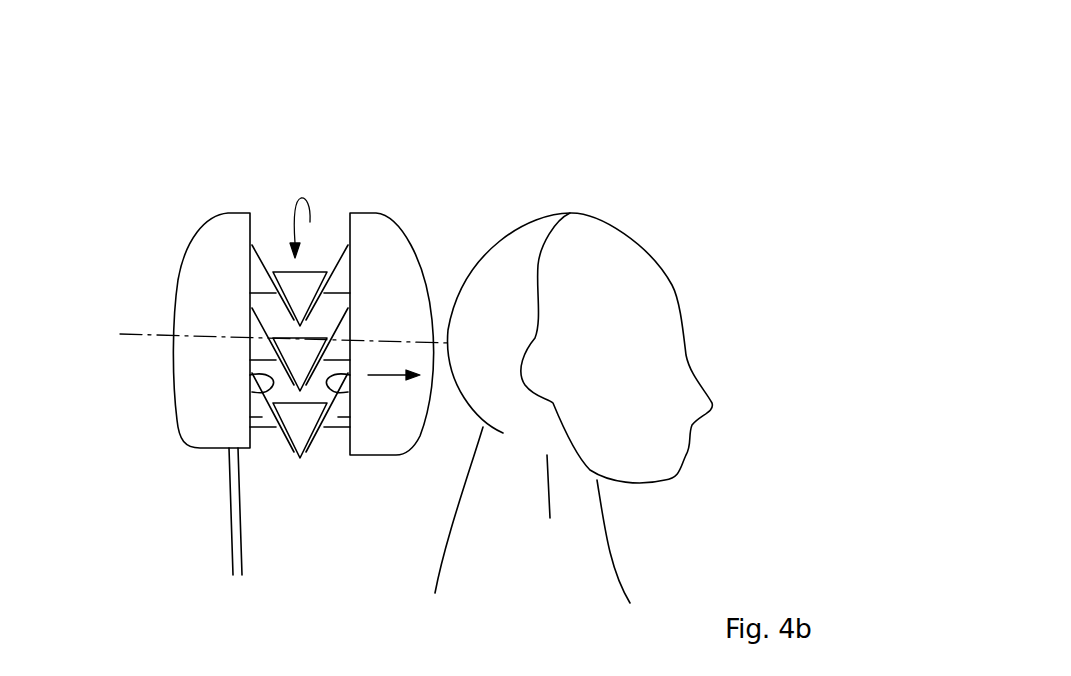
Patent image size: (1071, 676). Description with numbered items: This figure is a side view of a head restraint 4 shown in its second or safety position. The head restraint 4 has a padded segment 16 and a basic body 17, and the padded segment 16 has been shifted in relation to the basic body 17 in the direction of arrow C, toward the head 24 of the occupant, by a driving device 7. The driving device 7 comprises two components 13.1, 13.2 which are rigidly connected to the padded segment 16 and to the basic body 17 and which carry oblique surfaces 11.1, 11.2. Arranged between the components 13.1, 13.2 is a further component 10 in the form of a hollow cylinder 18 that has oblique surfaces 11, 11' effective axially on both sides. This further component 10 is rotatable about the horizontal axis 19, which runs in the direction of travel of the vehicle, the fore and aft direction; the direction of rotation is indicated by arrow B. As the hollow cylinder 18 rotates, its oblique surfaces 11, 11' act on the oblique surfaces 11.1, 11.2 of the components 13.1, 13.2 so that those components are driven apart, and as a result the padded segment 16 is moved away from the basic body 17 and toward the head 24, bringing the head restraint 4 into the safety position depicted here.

The head restraint 4 is at (382, 163).
The driving device 7 is at (277, 160).
The further component 10 is at (313, 276).
The hollow cylinder 18 is at (300, 365).
The oblique surface 11 is at (397, 321).
The oblique surface 11' is at (188, 324).
The oblique surface 11.1 is at (352, 380).
The oblique surface 11.2 is at (250, 377).
The component 13.1 is at (340, 417).
The component 13.2 is at (250, 418).
The padded segment 16 is at (369, 231).
The basic body 17 is at (226, 242).
The horizontal axis 19 is at (138, 334).
The head 24 is at (510, 316).